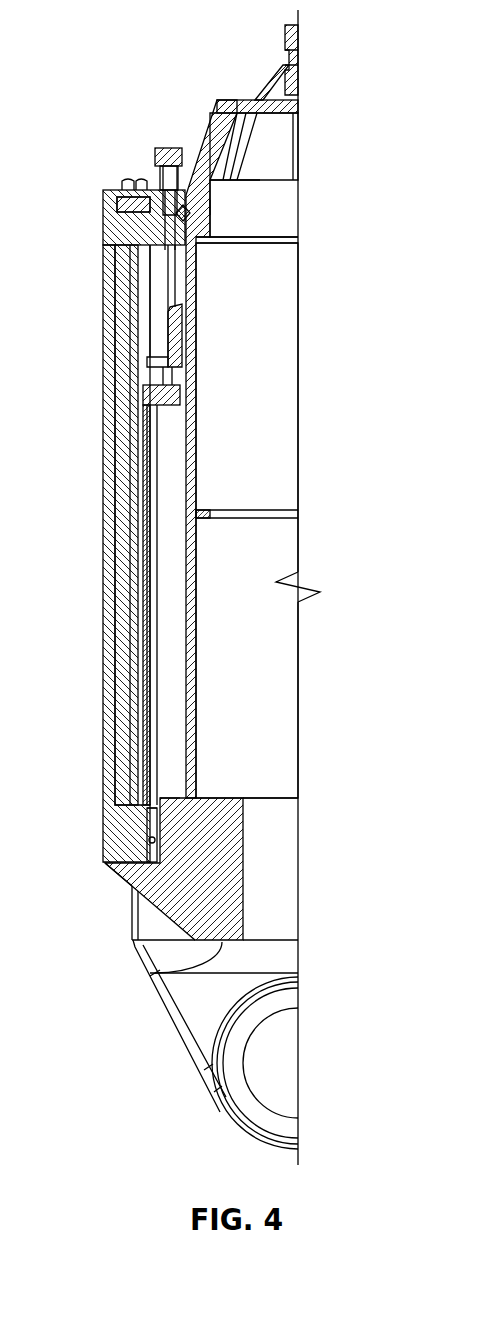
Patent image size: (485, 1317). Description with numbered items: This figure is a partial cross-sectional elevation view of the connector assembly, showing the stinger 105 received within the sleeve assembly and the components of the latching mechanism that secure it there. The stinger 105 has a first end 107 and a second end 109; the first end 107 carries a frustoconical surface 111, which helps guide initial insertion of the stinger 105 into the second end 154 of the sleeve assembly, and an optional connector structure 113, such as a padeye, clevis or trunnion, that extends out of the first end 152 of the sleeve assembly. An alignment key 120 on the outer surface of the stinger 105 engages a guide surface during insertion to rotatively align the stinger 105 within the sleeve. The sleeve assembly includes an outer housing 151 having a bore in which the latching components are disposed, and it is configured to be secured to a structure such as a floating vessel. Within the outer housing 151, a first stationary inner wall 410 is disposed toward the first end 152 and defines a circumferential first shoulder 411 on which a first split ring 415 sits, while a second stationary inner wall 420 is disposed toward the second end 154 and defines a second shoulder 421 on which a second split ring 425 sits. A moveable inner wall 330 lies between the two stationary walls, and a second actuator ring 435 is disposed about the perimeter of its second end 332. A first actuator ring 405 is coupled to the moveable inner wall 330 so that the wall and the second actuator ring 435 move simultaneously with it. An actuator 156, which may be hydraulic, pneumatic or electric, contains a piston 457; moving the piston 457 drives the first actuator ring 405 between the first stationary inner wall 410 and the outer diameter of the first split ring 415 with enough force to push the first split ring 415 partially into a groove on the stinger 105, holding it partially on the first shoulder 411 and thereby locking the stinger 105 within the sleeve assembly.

The stinger 105 is at (265, 452).
The first end 107 is at (228, 100).
The second end 109 is at (160, 972).
The frustoconical surface 111 is at (210, 118).
The connector structure 113 is at (285, 30).
The alignment key 120 is at (165, 332).
The outer housing 151 is at (103, 393).
The first end 152 is at (108, 192).
The second end 154 is at (133, 870).
The actuator 156 is at (160, 148).
The moveable inner wall 330 is at (148, 535).
The second end 332 is at (162, 810).
The first actuator ring 405 is at (230, 182).
The first stationary inner wall 410 is at (178, 215).
The first shoulder 411 is at (300, 238).
The first split ring 415 is at (212, 208).
The second stationary inner wall 420 is at (150, 830).
The second shoulder 421 is at (130, 875).
The second split ring 425 is at (158, 828).
The second actuator ring 435 is at (147, 808).
The piston 457 is at (165, 174).